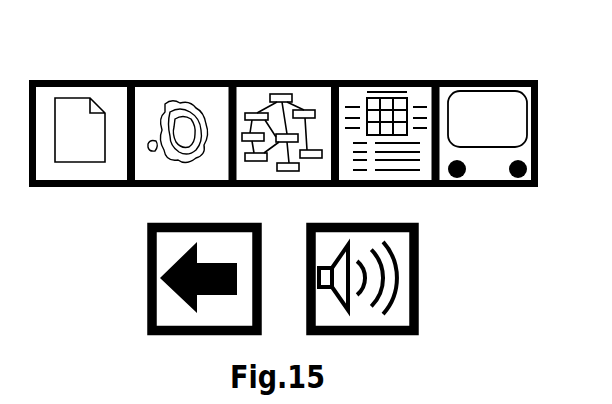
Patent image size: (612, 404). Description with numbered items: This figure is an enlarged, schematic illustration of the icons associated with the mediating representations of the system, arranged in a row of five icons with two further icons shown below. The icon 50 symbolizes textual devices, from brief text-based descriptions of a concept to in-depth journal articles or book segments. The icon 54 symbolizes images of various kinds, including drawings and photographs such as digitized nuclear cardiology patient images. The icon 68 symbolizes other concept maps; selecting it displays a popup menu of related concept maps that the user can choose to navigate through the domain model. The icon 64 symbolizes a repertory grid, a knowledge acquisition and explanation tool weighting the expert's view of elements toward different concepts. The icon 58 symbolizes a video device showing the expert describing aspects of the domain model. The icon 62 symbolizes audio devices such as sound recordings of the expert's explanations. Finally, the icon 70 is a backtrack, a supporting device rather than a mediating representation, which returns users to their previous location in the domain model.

The icon 50 is at (86, 72).
The icon 54 is at (185, 72).
The icon 68 is at (288, 62).
The icon 64 is at (380, 66).
The icon 58 is at (486, 66).
The icon 70 is at (134, 263).
The icon 62 is at (432, 283).